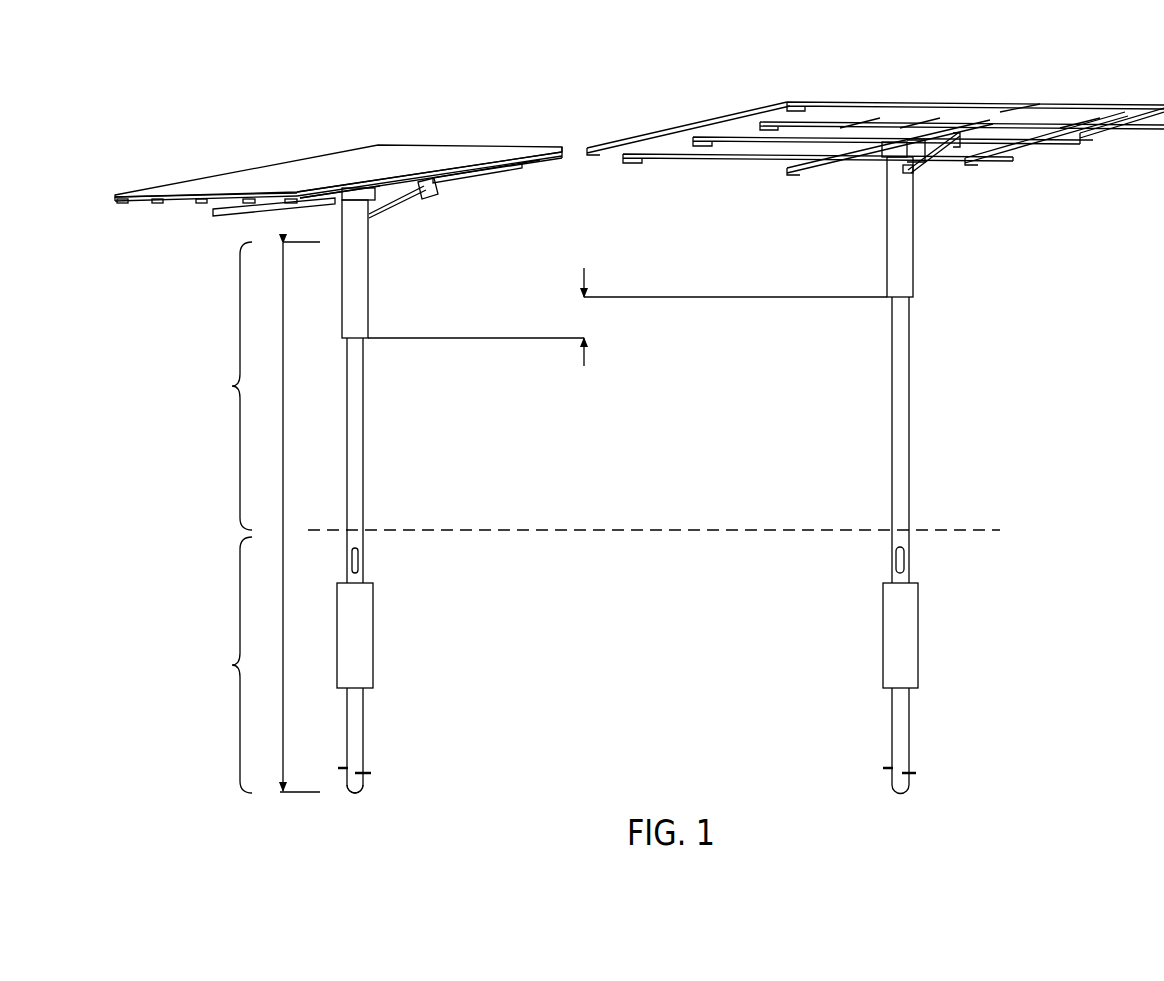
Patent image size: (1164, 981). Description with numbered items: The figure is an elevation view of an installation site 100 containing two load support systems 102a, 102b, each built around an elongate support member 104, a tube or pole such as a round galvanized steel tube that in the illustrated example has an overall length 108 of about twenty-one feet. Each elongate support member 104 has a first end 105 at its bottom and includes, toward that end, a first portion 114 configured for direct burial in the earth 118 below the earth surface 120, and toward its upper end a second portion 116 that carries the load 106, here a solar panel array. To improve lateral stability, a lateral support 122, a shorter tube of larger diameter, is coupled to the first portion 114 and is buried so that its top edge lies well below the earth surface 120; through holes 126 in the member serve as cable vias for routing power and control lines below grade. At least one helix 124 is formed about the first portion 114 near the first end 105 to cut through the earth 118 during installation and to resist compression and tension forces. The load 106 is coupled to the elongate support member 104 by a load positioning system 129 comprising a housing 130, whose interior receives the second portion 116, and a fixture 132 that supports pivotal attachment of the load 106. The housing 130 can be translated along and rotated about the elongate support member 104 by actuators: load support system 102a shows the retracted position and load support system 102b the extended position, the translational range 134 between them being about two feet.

The installation site 100 is at (618, 85).
The load support system 102a is at (225, 153).
The load support system 102b is at (1052, 92).
The elongate support member 104 is at (363, 486).
The first end 105 is at (353, 794).
The load 106 is at (456, 144).
The overall length 108 is at (291, 517).
The first portion 114 is at (232, 665).
The second portion 116 is at (232, 386).
The earth 118 is at (994, 622).
The earth surface 120 is at (947, 530).
The lateral support 122 is at (373, 642).
The helix 124 is at (372, 773).
The through holes 126 is at (359, 560).
The load positioning system 129 is at (380, 228).
The housing 130 is at (369, 318).
The fixture 132 is at (348, 197).
The translational range 134 is at (627, 317).